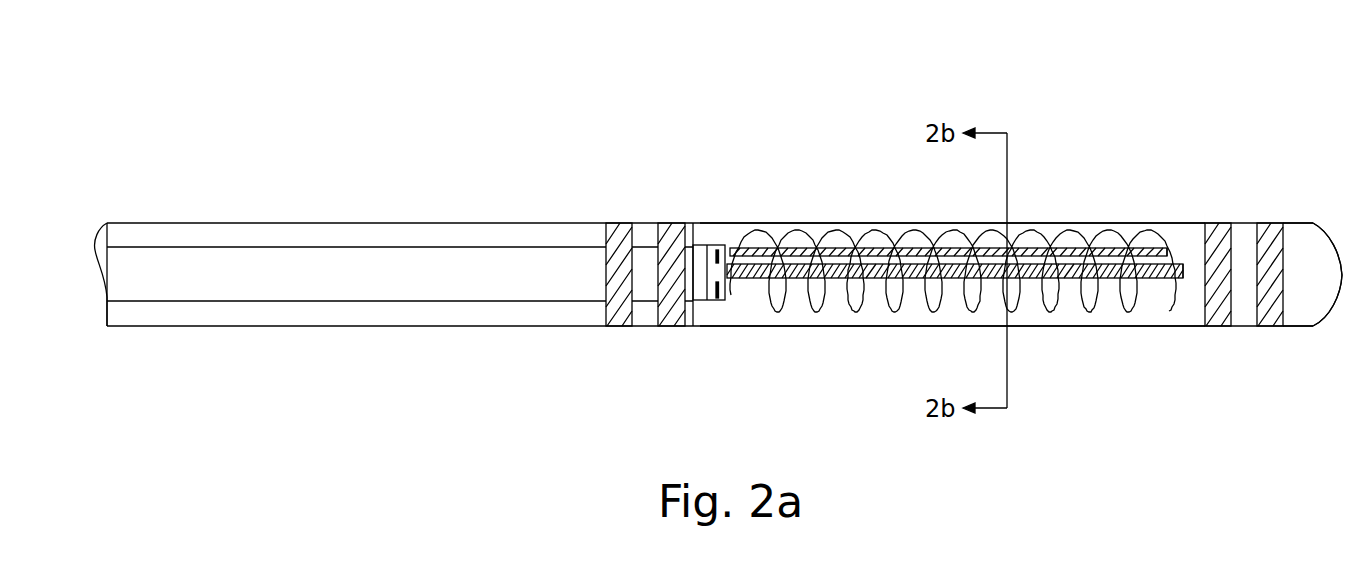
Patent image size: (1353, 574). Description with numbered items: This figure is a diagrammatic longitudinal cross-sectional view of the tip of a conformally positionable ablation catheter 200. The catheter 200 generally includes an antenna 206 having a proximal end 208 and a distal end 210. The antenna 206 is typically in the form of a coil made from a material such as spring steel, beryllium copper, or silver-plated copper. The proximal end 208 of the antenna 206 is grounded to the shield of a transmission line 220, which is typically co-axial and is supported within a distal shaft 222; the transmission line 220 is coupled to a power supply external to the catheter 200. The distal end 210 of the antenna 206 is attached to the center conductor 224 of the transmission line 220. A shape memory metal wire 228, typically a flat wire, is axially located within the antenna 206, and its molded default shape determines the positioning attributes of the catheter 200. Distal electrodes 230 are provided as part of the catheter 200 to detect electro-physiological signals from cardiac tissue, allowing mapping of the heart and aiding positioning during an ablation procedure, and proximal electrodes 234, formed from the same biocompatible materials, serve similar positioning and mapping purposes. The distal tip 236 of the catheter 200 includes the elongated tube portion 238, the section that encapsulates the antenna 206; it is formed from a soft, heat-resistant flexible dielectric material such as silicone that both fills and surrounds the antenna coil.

The conformally positionable ablation catheter 200 is at (1205, 82).
The antenna 206 is at (917, 247).
The proximal end 208 is at (717, 290).
The distal end 210 is at (1183, 268).
The transmission line 220 is at (498, 290).
The distal shaft 222 is at (466, 228).
The center conductor 224 is at (1080, 279).
The shape memory metal wire 228 is at (815, 247).
The distal electrodes 230 is at (1265, 225).
The proximal electrodes 234 is at (612, 222).
The distal tip 236 is at (1332, 305).
The elongated tube portion 238 is at (1030, 219).